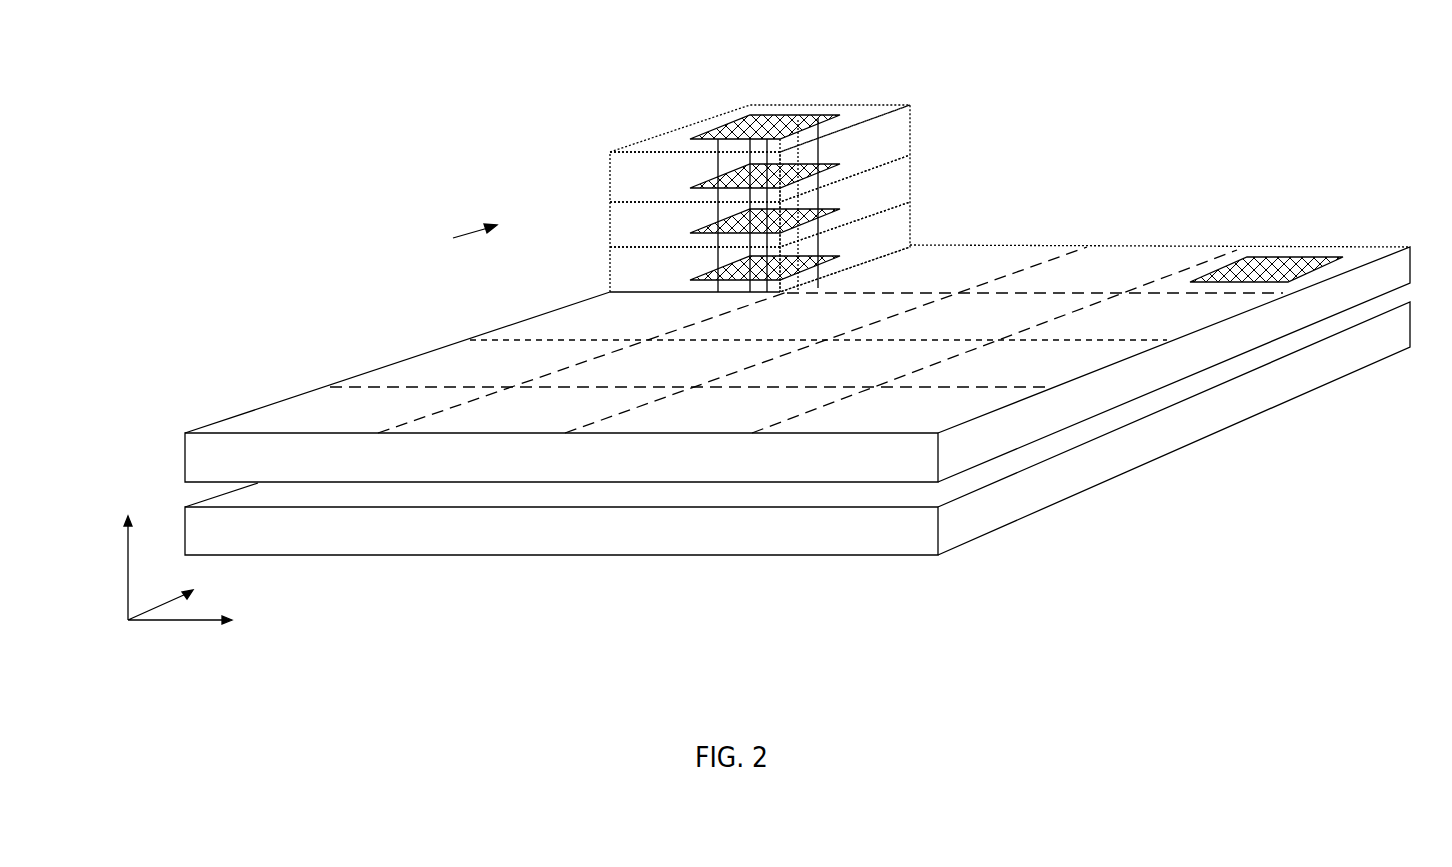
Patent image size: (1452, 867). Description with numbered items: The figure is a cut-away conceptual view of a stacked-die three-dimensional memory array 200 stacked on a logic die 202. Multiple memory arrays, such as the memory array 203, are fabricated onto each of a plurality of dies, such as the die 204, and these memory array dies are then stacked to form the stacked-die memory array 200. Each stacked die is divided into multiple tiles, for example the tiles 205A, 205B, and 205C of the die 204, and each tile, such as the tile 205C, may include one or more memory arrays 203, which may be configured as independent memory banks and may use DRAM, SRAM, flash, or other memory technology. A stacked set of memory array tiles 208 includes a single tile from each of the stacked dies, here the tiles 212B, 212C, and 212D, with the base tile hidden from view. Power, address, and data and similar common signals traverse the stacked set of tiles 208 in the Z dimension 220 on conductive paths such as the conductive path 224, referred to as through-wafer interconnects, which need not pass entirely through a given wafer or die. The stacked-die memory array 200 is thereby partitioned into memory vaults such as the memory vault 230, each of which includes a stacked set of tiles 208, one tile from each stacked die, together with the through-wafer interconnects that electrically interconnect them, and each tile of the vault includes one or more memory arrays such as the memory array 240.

The stacked-die 3D memory array 200 is at (170, 79).
The logic die 202 is at (1075, 472).
The memory array 203 is at (1275, 257).
The die 204 is at (1178, 362).
The tile 205A is at (988, 258).
The tile 205B is at (1097, 258).
The tile 205C is at (1363, 256).
The stacked set of memory array tiles 208 is at (795, 160).
The tile 212B is at (912, 225).
The tile 212C is at (912, 183).
The tile 212D is at (912, 133).
The Z dimension 220 is at (130, 486).
The conductive path 224 is at (717, 167).
The memory vault 230 is at (455, 239).
The memory array 240 is at (797, 116).